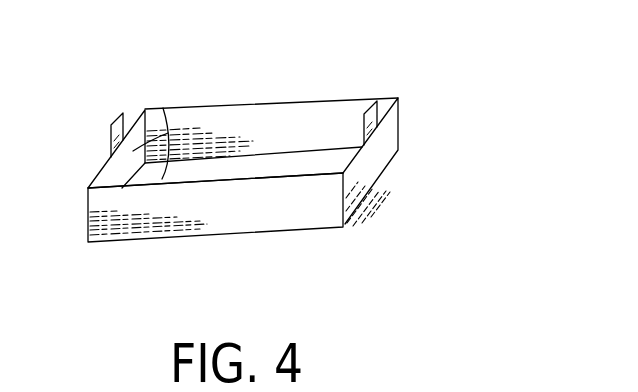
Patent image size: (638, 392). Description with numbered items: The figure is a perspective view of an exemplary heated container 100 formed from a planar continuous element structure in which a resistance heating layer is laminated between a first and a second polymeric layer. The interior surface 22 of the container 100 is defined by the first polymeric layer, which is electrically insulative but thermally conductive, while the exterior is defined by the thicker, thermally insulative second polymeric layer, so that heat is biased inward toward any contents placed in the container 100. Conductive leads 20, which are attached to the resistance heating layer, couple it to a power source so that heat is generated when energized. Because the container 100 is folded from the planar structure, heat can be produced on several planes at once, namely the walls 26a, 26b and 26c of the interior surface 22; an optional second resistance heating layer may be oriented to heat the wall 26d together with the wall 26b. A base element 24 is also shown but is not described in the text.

The conductive leads 20 is at (119, 117).
The interior surface 22 is at (198, 128).
The base block 24 is at (353, 207).
The wall 26a is at (110, 175).
The wall 26b is at (270, 171).
The wall 26c is at (206, 173).
The wall 26d is at (330, 127).
The container 100 is at (261, 243).